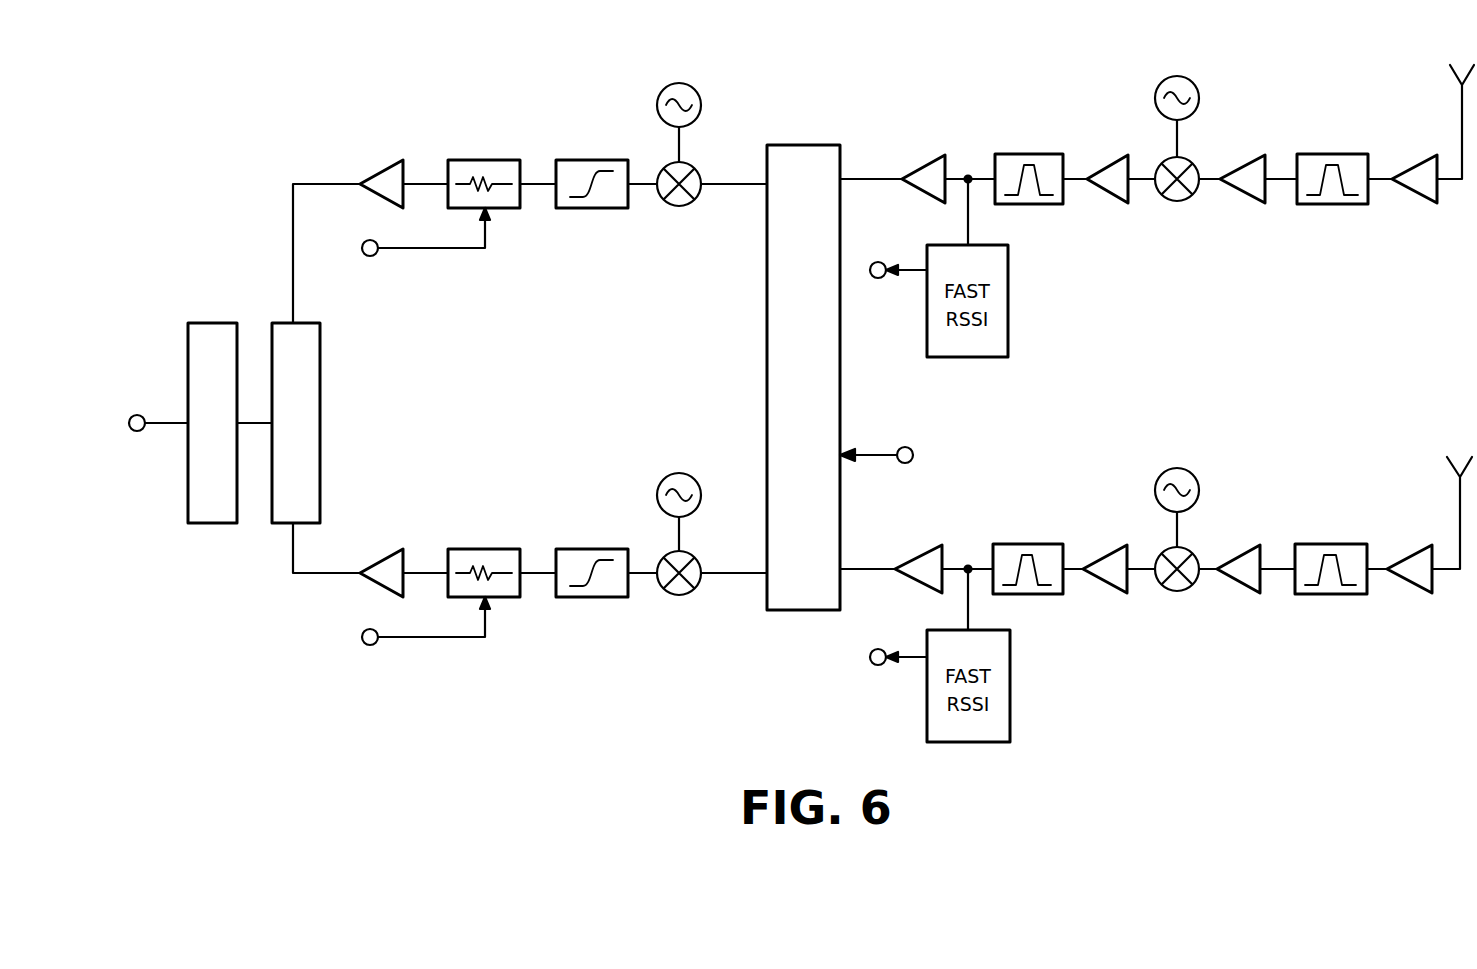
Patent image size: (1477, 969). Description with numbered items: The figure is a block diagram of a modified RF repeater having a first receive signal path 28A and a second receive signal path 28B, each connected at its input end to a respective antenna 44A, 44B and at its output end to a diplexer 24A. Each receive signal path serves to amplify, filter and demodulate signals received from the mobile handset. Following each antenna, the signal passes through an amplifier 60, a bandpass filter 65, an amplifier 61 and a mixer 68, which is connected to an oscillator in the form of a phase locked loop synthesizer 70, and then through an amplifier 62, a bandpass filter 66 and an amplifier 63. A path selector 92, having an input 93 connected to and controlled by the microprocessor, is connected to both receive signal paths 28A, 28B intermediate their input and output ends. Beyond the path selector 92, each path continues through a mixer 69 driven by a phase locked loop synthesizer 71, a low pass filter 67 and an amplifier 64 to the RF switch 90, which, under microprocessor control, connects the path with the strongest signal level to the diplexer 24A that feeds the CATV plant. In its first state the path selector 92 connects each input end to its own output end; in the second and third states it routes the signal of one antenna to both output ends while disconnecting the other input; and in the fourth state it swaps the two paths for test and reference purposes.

The diplexer 24A is at (217, 523).
The RF switch 90 is at (320, 378).
The amplifier 64 is at (388, 167).
The low pass filter 67 is at (608, 212).
The mixer 69 is at (684, 208).
The phase locked loop synthesizer 71 is at (657, 106).
The path selector 92 is at (840, 408).
The input 93 is at (905, 463).
The amplifier 63 is at (926, 202).
The bandpass filter 66 is at (1046, 208).
The amplifier 62 is at (1112, 198).
The mixer 68 is at (1178, 202).
The phase locked loop synthesizer 70 is at (1155, 98).
The amplifier 61 is at (1241, 196).
The bandpass filter 65 is at (1343, 205).
The amplifier 60 is at (1411, 196).
The antenna 44A is at (1462, 112).
The antenna 44B is at (1460, 500).
The first receive signal path 28A is at (1135, 242).
The second receive signal path 28B is at (1137, 650).